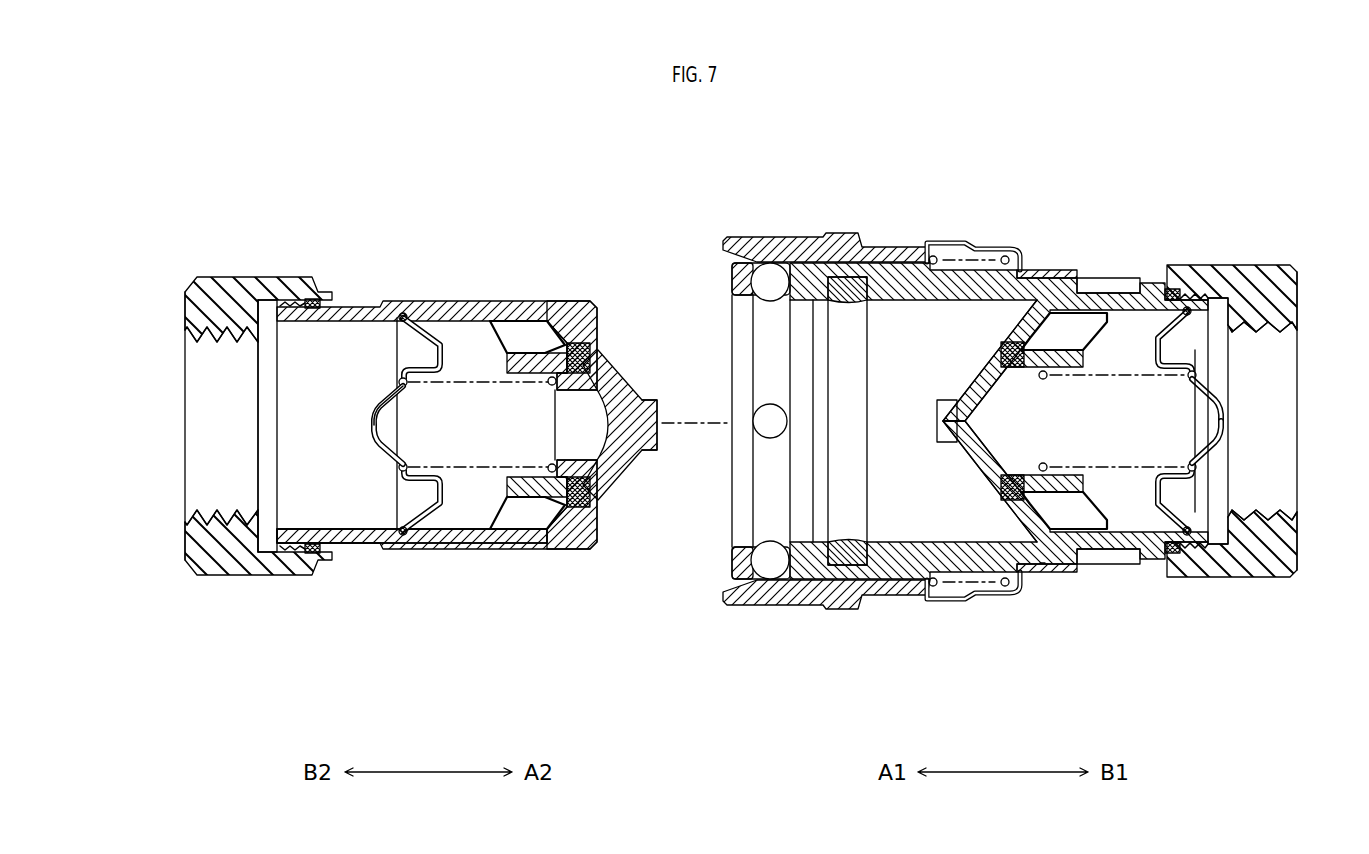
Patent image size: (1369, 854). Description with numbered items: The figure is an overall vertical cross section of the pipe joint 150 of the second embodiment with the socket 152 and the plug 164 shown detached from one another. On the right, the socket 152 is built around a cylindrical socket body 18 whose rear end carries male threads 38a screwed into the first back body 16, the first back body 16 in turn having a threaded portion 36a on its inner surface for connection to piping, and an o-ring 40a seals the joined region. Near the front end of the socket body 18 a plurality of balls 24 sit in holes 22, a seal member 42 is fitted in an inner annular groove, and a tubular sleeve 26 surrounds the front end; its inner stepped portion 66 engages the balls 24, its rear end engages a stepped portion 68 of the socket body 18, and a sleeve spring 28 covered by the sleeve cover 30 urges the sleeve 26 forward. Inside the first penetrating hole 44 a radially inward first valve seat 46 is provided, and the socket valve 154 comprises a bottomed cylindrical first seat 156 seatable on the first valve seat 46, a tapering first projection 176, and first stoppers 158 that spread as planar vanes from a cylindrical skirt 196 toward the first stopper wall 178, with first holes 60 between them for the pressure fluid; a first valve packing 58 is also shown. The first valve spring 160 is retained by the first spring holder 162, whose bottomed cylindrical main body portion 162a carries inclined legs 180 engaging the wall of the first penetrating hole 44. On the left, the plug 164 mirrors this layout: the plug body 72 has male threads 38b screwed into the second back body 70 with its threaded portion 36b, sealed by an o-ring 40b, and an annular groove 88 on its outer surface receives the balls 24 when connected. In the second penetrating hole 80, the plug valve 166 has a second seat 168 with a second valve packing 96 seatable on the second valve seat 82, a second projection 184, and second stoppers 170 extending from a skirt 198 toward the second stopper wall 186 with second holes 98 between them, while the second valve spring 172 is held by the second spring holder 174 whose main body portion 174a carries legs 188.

The pipe joint 150 is at (1182, 108).
The socket 152 is at (1183, 191).
The plug 164 is at (338, 213).
The first back body 16 is at (1260, 571).
The socket body 18 is at (1118, 566).
The holes 22 is at (770, 250).
The balls 24 is at (752, 287).
The sleeve 26 is at (838, 236).
The sleeve spring 28 is at (1006, 254).
The sleeve cover 30 is at (968, 241).
The threaded portion 36a is at (1270, 322).
The threaded portion 36b is at (200, 345).
The male threads 38a is at (1196, 272).
The male threads 38b is at (305, 556).
The o-ring 40a is at (1172, 290).
The o-ring 40b is at (312, 297).
The seal member 42 is at (857, 292).
The first penetrating hole 44 is at (905, 568).
The first valve seat 46 is at (1005, 354).
The first valve packing 58 is at (1000, 582).
The first holes 60 is at (1155, 342).
The stepped portion 66 is at (763, 574).
The stepped portion 68 is at (931, 254).
The second back body 70 is at (222, 585).
The plug body 72 is at (488, 553).
The second penetrating hole 80 is at (373, 545).
The second valve seat 82 is at (593, 360).
The annular groove 88 is at (378, 305).
The second valve packing 96 is at (577, 505).
The second holes 98 is at (436, 330).
The socket valve 154 is at (968, 455).
The first seat 156 is at (992, 483).
The first stoppers 158 is at (1068, 318).
The first valve spring 160 is at (1188, 383).
The first spring holder 162 is at (1216, 395).
The main body portion 162a is at (1217, 452).
The plug valve 166 is at (620, 386).
The second seat 168 is at (593, 487).
The second stoppers 170 is at (512, 328).
The second valve spring 172 is at (550, 386).
The second spring holder 174 is at (383, 455).
The main body portion 174a is at (384, 406).
The first projection 176 is at (938, 416).
The first stopper wall 178 is at (1045, 574).
The legs 180 is at (1192, 567).
The second projection 184 is at (658, 435).
The second stopper wall 186 is at (577, 312).
The legs 188 is at (410, 310).
The skirt 196 is at (1072, 462).
The skirt 198 is at (527, 473).